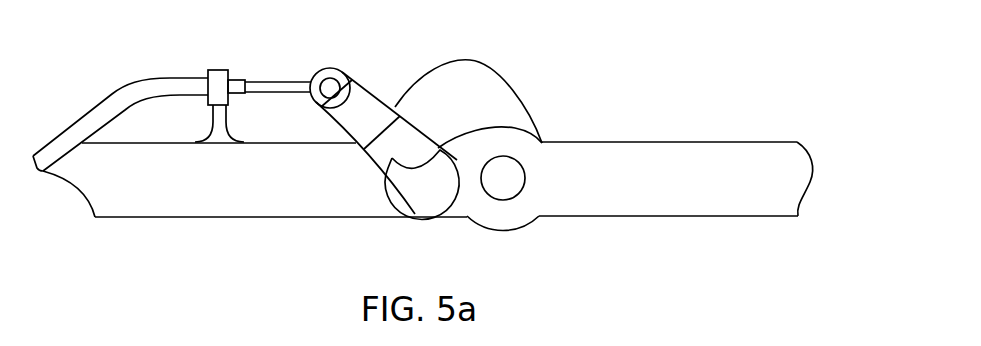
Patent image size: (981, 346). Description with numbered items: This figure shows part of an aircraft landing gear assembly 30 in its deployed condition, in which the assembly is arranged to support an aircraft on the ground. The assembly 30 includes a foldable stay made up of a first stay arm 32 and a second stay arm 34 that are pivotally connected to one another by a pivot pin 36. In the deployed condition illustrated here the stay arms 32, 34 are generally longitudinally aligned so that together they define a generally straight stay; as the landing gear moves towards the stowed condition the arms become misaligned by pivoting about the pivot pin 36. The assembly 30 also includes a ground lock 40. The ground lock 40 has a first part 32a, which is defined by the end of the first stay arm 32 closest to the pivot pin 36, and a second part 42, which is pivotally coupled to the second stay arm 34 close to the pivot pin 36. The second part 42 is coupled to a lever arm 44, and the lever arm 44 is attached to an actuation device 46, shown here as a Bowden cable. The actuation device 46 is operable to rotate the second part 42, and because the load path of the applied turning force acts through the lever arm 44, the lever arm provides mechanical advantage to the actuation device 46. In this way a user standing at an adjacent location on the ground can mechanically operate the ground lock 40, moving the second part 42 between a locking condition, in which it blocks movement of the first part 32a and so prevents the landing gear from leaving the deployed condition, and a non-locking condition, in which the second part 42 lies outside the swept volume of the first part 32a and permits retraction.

The aircraft landing gear assembly 30 is at (602, 50).
The first stay arm 32 is at (657, 201).
The first part 32a is at (530, 119).
The second stay arm 34 is at (318, 198).
The pivot pin 36 is at (503, 183).
The ground lock 40 is at (450, 79).
The second part 42 is at (418, 193).
The lever arm 44 is at (363, 110).
The actuation device 46 is at (163, 88).